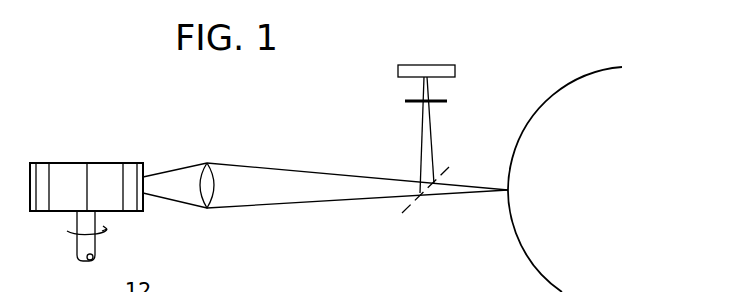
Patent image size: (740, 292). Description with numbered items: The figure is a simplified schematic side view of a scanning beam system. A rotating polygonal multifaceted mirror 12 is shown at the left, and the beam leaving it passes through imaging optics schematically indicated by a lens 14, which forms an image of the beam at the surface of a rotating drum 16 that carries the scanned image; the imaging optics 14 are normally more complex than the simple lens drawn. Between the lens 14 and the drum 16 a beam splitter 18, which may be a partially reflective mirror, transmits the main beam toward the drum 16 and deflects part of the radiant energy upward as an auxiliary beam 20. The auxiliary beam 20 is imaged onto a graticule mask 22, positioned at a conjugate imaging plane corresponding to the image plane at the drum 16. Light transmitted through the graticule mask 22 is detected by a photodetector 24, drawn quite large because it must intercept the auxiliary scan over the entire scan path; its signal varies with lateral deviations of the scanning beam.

The rotating polygonal multifaceted mirror 12 is at (100, 163).
The imaging optics 14 is at (208, 180).
The rotating drum 16 is at (565, 85).
The beam splitter 18 is at (443, 168).
The auxiliary beam 20 is at (423, 150).
The graticule mask 22 is at (405, 100).
The photodetector 24 is at (435, 65).